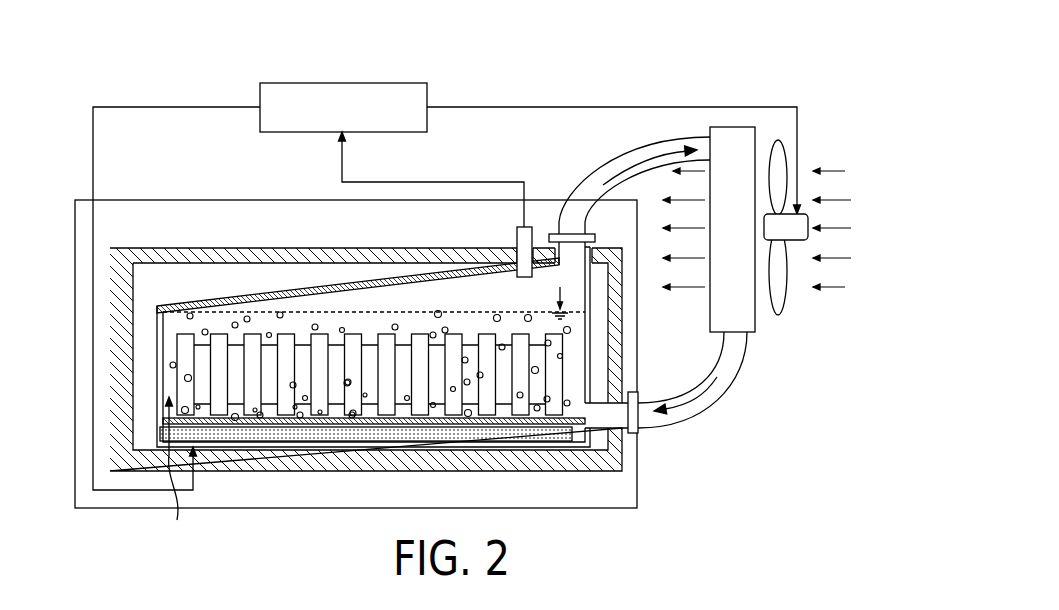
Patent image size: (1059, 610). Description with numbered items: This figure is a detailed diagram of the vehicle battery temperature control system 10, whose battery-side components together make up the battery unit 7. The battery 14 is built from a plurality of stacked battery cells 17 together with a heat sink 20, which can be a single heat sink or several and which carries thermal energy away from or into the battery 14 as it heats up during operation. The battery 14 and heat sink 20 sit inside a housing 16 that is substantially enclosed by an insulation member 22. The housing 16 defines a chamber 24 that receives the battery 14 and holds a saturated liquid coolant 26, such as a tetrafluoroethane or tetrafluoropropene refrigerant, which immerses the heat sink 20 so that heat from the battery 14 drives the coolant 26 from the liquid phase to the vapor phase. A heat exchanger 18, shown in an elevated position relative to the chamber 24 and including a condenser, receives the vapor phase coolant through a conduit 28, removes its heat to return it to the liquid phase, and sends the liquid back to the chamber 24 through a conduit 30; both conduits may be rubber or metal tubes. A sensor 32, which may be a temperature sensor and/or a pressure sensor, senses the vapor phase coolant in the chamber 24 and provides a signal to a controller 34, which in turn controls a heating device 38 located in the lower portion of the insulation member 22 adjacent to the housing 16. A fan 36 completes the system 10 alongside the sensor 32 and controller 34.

The battery unit 7 is at (105, 508).
The vehicle battery temperature control system 10 is at (160, 93).
The battery 14 is at (175, 475).
The housing 16 is at (208, 297).
The battery cells 17 is at (202, 344).
The heat exchanger 18 is at (757, 318).
The heat sink 20 is at (175, 355).
The insulation member 22 is at (198, 247).
The chamber 24 is at (410, 290).
The saturated liquid coolant 26 is at (356, 311).
The conduit 28 is at (633, 155).
The conduit 30 is at (677, 421).
The sensor 32 is at (530, 226).
The controller 34 is at (298, 83).
The fan 36 is at (808, 222).
The heating device 38 is at (310, 443).